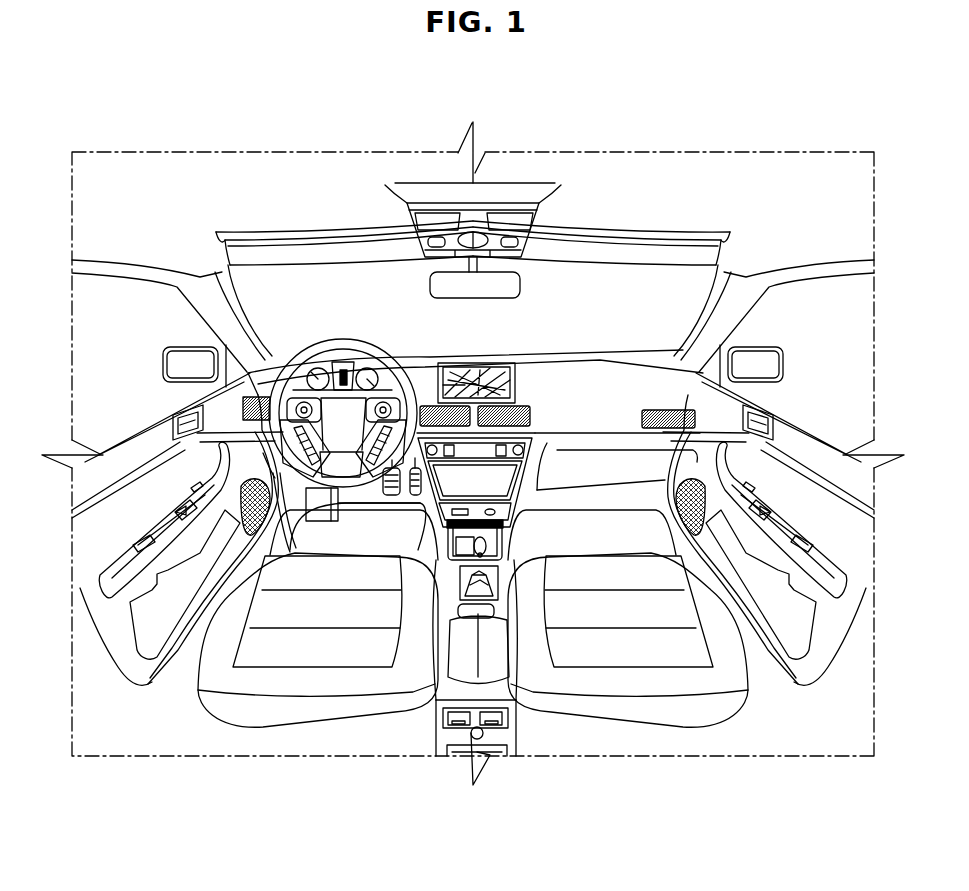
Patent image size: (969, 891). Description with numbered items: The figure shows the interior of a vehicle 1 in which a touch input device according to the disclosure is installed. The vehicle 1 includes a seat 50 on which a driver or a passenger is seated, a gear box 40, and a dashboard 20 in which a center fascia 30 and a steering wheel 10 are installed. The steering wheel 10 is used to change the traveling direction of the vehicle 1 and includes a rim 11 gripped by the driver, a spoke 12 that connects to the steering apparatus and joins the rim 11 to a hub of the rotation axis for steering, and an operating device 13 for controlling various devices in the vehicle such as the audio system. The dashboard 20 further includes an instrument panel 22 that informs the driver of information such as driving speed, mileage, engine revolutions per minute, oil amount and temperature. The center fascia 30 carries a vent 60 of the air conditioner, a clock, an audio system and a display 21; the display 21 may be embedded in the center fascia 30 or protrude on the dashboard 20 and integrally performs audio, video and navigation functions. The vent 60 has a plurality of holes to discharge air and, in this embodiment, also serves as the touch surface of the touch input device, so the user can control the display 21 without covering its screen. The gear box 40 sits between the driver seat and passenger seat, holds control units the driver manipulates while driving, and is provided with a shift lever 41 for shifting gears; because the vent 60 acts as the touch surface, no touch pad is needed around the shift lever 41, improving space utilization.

The vehicle 1 is at (230, 109).
The steering wheel 10 is at (330, 347).
The rim 11 is at (300, 356).
The spoke 12 is at (173, 438).
The operating device 13 is at (385, 395).
The dashboard 20 is at (608, 357).
The display 21 is at (470, 363).
The instrument panel 22 is at (366, 365).
The center fascia 30 is at (525, 468).
The gear box 40 is at (503, 585).
The shift lever 41 is at (485, 548).
The seat 50 is at (398, 712).
The vent 60 is at (537, 405).